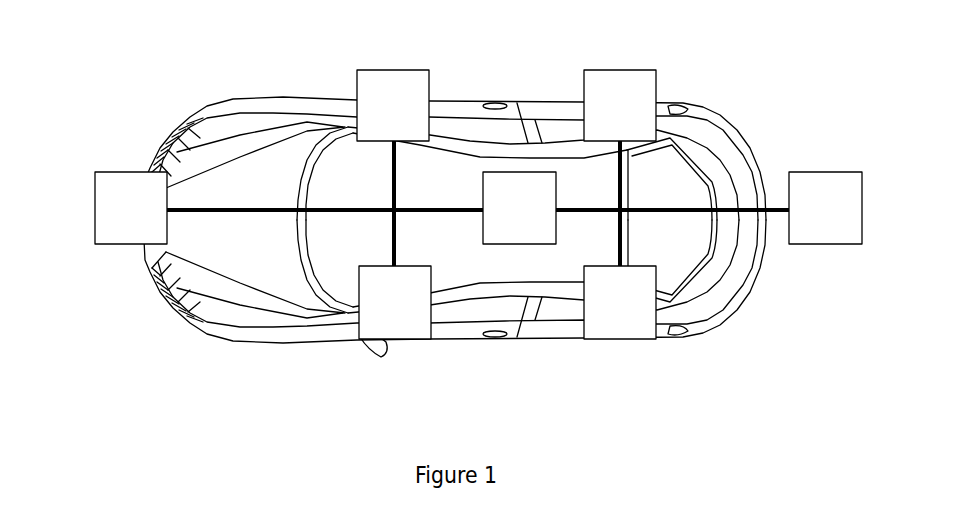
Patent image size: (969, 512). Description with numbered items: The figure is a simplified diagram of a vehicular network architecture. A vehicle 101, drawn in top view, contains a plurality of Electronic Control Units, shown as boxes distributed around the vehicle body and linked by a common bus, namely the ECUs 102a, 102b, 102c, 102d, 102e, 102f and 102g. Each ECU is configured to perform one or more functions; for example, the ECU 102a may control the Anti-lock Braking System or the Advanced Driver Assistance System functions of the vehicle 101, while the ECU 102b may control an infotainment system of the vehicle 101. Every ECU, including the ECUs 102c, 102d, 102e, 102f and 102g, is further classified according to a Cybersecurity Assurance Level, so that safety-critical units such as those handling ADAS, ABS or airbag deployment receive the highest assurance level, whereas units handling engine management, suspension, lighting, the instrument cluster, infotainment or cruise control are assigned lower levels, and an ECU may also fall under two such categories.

The vehicle 101 is at (717, 122).
The Electronic Control Unit 102a is at (385, 79).
The Electronic Control Unit 102b is at (605, 75).
The Electronic Control Unit 102c is at (854, 179).
The Electronic Control Unit 102d is at (590, 330).
The Electronic Control Unit 102e is at (388, 335).
The Electronic Control Unit 102f is at (100, 236).
The Electronic Control Unit 102g is at (492, 178).